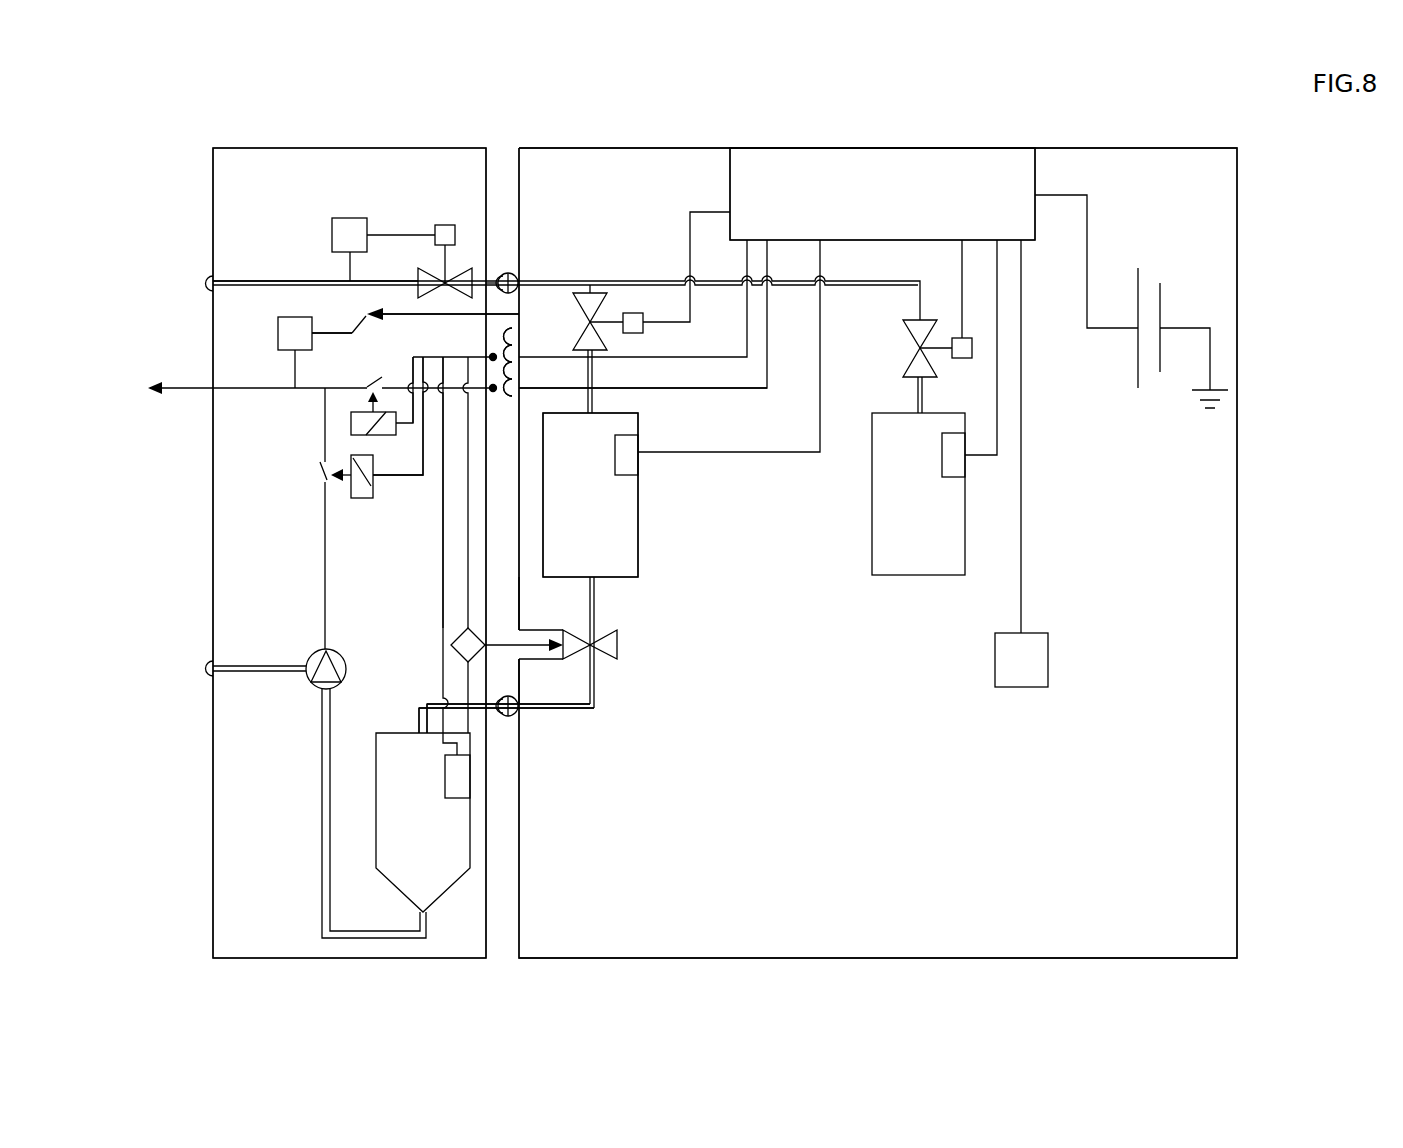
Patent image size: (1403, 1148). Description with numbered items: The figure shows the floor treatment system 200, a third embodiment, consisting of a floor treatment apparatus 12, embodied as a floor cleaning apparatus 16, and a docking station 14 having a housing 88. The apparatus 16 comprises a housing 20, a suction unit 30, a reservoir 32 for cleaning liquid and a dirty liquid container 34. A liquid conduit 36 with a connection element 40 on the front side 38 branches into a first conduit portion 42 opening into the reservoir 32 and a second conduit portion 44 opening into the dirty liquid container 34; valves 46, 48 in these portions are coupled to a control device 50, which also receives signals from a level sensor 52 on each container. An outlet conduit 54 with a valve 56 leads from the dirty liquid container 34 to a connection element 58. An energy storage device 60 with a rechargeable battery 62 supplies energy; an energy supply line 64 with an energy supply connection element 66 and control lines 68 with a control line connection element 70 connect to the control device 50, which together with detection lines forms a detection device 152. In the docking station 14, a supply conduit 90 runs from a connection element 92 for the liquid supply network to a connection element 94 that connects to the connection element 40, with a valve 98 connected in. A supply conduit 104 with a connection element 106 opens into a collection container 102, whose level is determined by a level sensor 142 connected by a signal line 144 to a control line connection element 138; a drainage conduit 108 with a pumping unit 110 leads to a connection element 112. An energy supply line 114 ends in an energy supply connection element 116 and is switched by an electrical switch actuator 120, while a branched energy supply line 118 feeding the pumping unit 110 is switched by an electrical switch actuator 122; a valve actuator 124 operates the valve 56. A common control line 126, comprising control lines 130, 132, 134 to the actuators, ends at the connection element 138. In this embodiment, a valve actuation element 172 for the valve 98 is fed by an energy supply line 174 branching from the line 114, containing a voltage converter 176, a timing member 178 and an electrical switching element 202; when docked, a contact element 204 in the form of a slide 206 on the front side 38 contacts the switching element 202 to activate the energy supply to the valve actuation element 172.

The floor treatment apparatus 12 is at (1267, 240).
The docking station 14 is at (314, 128).
The floor cleaning apparatus 16 is at (1267, 293).
The housing 20 is at (1237, 745).
The suction unit 30 is at (1030, 657).
The reservoir 32 is at (900, 577).
The dirty liquid container 34 is at (615, 540).
The liquid conduit 36 is at (592, 293).
The front side 38 is at (508, 158).
The connection element 40 is at (518, 283).
The first conduit portion 42 is at (918, 392).
The second conduit portion 44 is at (597, 403).
The valve 46 is at (905, 360).
The valve 48 is at (605, 340).
The control device 50 is at (882, 194).
The level sensor 52 is at (628, 455).
The outlet conduit 54 is at (594, 690).
The valve 56 is at (617, 645).
The connection element 58 is at (516, 700).
The energy storage device 60 is at (1150, 402).
The rechargeable battery 62 is at (1162, 310).
The energy supply line 64 is at (718, 390).
The energy supply connection element 66 is at (543, 420).
The control lines 68 is at (715, 357).
The control line connection element 70 is at (519, 330).
The housing 88 is at (213, 183).
The supply conduit 90 is at (233, 281).
The connection element 92 is at (213, 283).
The connection element 94 is at (498, 273).
The valve 98 is at (425, 262).
The collection container 102 is at (448, 838).
The supply conduit 104 is at (475, 710).
The connection element 106 is at (513, 716).
The drainage conduit 108 is at (322, 830).
The pumping unit 110 is at (312, 685).
The connection element 112 is at (207, 668).
The energy supply line 114 is at (250, 388).
The energy supply connection element 116 is at (496, 395).
The energy supply line 118 is at (325, 583).
The electrical switch actuator 120 is at (351, 423).
The electrical switch actuator 122 is at (370, 498).
The valve actuator 124 is at (452, 645).
The control line 126 is at (380, 378).
The control line 130 is at (351, 462).
The control line 132 is at (423, 475).
The control line 134 is at (487, 590).
The control line connection element 138 is at (491, 357).
The level sensor 142 is at (460, 784).
The signal line 144 is at (443, 597).
The detection device 152 is at (718, 178).
The valve actuation element 172 is at (445, 225).
The energy supply line 174 is at (322, 333).
The voltage converter 176 is at (278, 333).
The timing member 178 is at (350, 218).
The floor treatment system 200 is at (1022, 128).
The electrical switching element 202 is at (352, 318).
The contact element 204 is at (410, 314).
The slide 206 is at (519, 313).